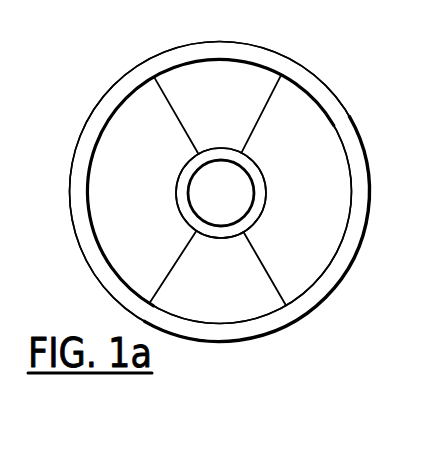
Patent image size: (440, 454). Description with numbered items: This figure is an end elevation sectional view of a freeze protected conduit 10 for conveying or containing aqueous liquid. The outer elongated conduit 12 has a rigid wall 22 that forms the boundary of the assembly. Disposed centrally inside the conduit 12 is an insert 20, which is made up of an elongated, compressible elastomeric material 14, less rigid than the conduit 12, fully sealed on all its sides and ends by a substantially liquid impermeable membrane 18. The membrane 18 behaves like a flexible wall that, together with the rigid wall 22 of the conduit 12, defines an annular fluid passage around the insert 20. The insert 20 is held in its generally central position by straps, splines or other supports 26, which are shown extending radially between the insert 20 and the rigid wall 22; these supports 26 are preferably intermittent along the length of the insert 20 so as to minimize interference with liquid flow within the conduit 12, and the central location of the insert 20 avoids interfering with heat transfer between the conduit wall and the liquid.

The freeze protected conduit 10 is at (330, 310).
The elongated conduit 12 is at (292, 63).
The compressible elastomeric material 14 is at (207, 182).
The liquid impermeable membrane 18 is at (182, 212).
The insert 20 is at (221, 149).
The rigid wall 22 is at (269, 58).
The supports 26 is at (158, 81).